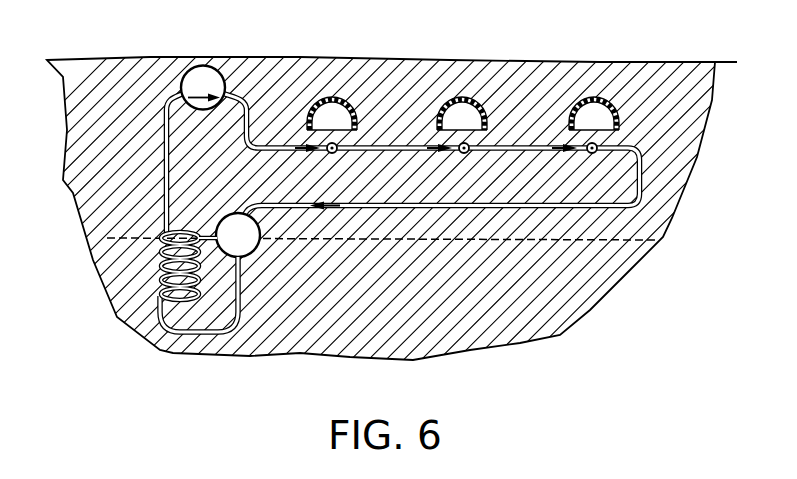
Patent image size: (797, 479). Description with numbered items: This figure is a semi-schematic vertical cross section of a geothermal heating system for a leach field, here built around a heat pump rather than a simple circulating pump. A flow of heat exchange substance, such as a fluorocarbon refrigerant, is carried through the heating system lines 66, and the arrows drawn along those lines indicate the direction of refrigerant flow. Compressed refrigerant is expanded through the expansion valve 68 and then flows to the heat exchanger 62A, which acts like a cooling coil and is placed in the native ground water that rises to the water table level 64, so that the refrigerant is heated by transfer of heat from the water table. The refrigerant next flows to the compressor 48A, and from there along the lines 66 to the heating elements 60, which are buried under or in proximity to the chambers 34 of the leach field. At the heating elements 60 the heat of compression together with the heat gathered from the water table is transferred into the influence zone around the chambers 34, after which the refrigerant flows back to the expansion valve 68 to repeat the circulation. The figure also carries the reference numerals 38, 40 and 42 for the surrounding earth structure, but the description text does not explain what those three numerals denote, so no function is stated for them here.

The chamber 34 is at (334, 97).
The substrate body 38 is at (130, 183).
The heater assembly 40 is at (622, 115).
The top surface 42 is at (622, 62).
The compressor 48A is at (206, 64).
The heating element 60 is at (334, 153).
The heat exchanger 62A is at (206, 283).
The water table level 64 is at (652, 242).
The heating system line 66 is at (163, 130).
The expansion valve 68 is at (217, 215).